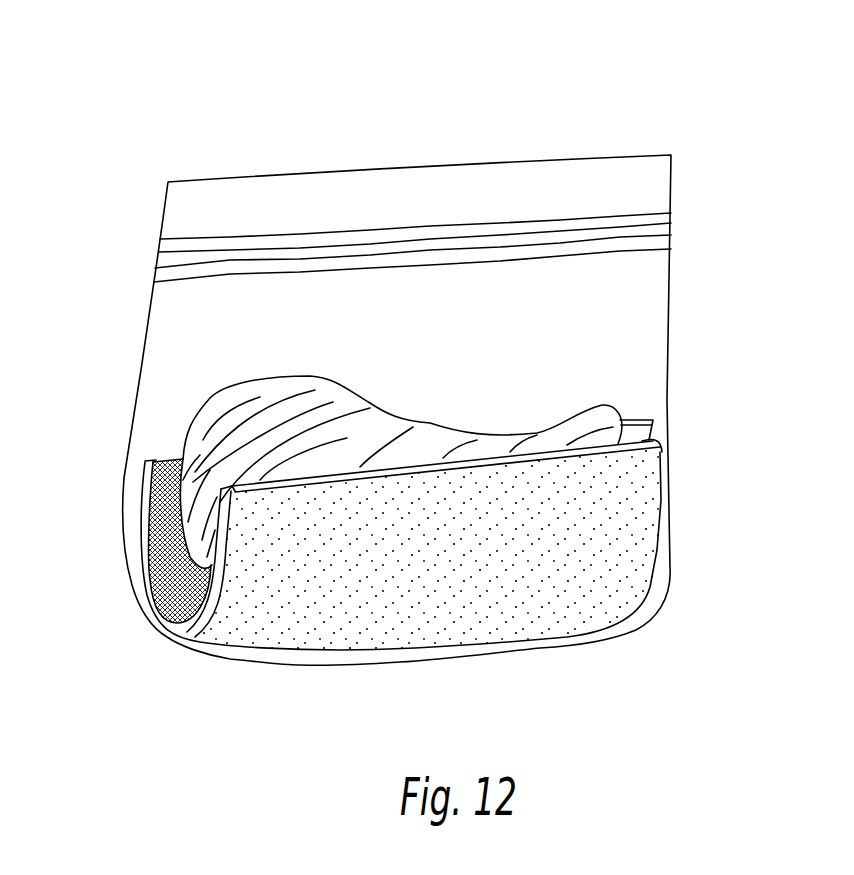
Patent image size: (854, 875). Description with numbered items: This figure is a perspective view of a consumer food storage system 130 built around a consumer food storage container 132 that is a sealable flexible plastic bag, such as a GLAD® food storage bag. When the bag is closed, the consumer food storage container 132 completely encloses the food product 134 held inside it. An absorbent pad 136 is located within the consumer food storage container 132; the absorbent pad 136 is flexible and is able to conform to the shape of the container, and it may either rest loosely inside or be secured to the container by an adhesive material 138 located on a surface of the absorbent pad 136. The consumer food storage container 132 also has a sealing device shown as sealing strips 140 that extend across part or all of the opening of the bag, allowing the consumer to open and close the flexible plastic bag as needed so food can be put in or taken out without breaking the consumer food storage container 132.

The consumer food storage system 130 is at (387, 346).
The consumer food storage container 132 is at (237, 323).
The food product 134 is at (387, 422).
The absorbent pad 136 is at (172, 577).
The adhesive material 138 is at (607, 527).
The sealing strips 140 is at (181, 282).